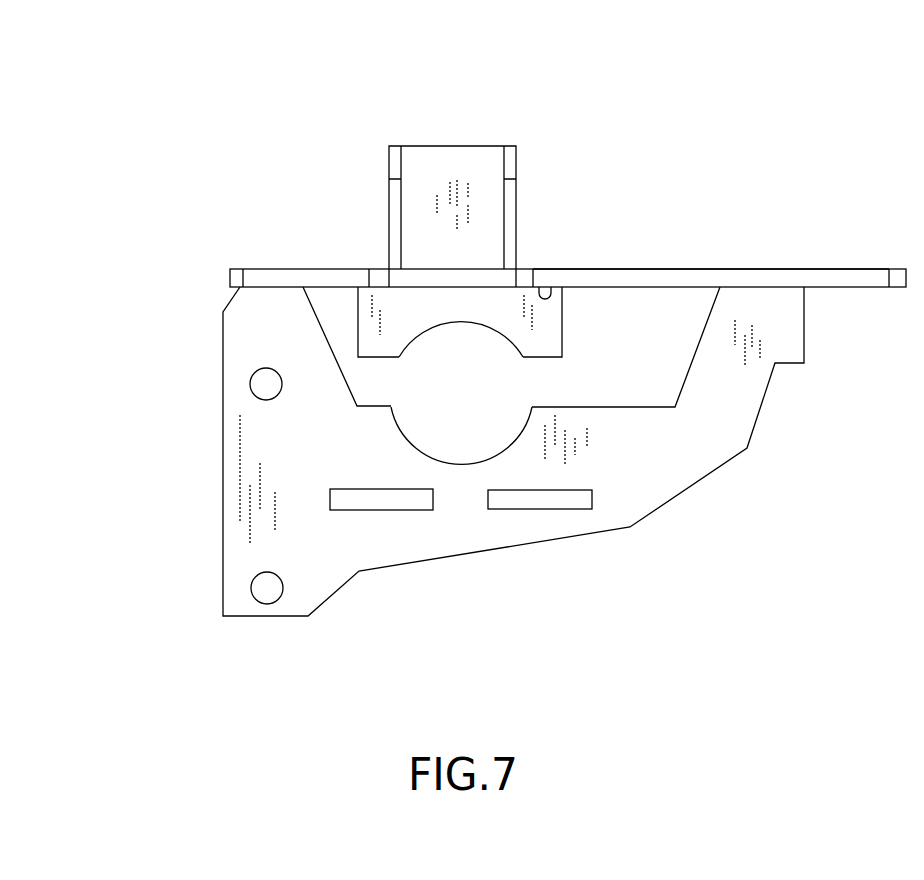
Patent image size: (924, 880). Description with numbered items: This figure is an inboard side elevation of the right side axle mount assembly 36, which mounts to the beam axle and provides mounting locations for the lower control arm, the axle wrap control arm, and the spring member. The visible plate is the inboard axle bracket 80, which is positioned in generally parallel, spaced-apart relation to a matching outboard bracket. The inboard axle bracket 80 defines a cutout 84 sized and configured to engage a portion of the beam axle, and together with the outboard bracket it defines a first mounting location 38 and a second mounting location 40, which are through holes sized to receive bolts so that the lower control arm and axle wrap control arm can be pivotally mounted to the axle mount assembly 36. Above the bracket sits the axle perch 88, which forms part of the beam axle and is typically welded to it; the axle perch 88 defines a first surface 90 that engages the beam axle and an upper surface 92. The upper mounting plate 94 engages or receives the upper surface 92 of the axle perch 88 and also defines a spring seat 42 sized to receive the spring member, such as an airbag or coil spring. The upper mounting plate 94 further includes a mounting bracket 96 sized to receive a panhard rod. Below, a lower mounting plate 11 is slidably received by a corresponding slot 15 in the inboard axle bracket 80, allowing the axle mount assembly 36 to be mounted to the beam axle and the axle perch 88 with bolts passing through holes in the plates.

The axle mount assembly 36 is at (136, 90).
The mounting bracket 96 is at (427, 146).
The upper surface 92 is at (546, 297).
The upper mounting plate 94 is at (693, 269).
The spring seat 42 is at (840, 269).
The axle perch 88 is at (562, 326).
The first surface 90 is at (502, 336).
The cutout 84 is at (446, 463).
The first mounting location 38 is at (250, 385).
The inboard axle bracket 80 is at (223, 503).
The second mounting location 40 is at (251, 590).
The slot 15 is at (347, 497).
The lower mounting plate 11 is at (399, 510).